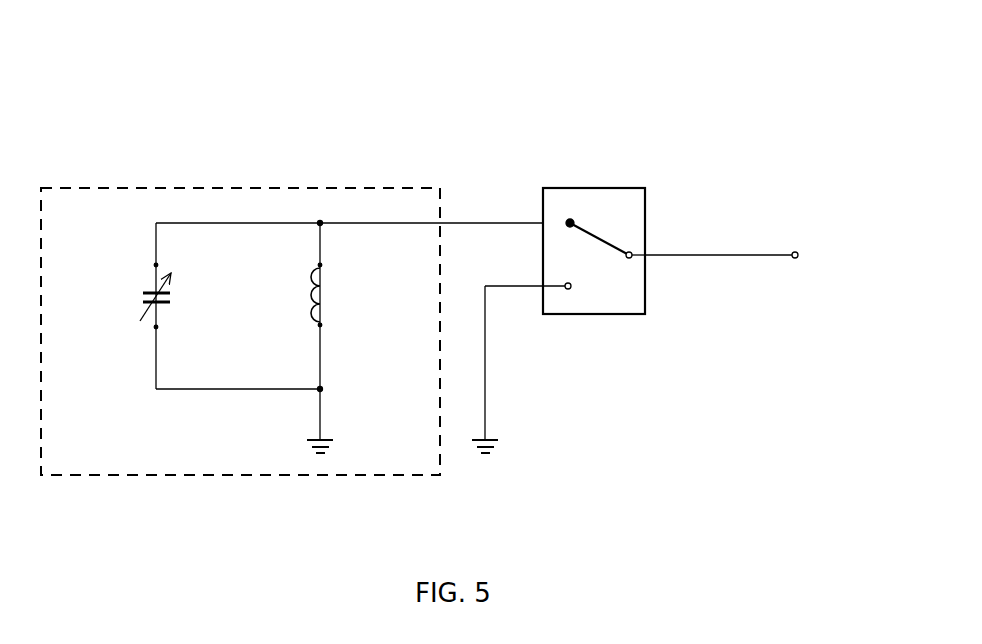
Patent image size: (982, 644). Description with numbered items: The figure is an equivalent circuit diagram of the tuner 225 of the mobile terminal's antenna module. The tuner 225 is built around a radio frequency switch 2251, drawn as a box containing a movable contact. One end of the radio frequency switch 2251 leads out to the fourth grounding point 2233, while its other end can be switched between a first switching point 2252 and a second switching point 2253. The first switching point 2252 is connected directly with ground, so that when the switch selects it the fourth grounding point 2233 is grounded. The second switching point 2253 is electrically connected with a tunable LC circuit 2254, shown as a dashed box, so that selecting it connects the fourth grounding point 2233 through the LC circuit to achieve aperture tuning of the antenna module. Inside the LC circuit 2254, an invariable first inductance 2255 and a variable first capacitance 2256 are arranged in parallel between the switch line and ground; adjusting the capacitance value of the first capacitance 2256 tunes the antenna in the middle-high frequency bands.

The tuner 225 is at (188, 47).
The tunable LC circuit 2254 is at (252, 180).
The first inductance 2255 is at (324, 303).
The first capacitance 2256 is at (135, 308).
The radio frequency switch 2251 is at (648, 222).
The second switching point 2253 is at (573, 217).
The first switching point 2252 is at (573, 291).
The fourth grounding point 2233 is at (799, 259).